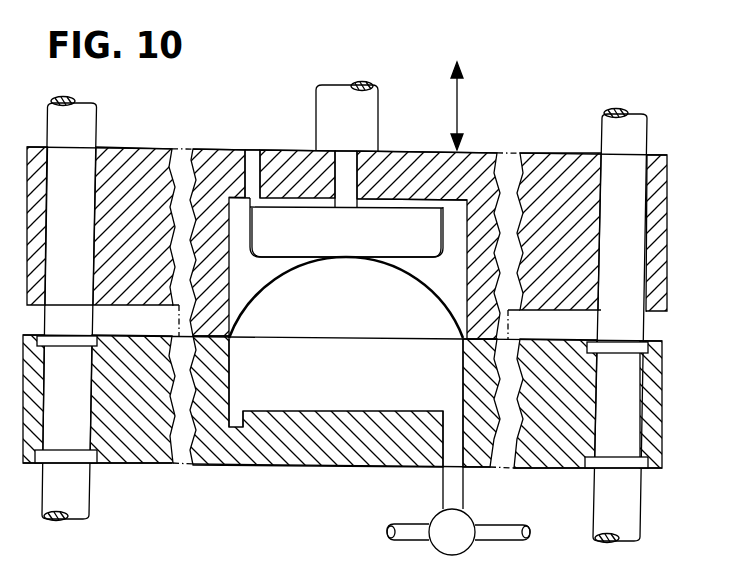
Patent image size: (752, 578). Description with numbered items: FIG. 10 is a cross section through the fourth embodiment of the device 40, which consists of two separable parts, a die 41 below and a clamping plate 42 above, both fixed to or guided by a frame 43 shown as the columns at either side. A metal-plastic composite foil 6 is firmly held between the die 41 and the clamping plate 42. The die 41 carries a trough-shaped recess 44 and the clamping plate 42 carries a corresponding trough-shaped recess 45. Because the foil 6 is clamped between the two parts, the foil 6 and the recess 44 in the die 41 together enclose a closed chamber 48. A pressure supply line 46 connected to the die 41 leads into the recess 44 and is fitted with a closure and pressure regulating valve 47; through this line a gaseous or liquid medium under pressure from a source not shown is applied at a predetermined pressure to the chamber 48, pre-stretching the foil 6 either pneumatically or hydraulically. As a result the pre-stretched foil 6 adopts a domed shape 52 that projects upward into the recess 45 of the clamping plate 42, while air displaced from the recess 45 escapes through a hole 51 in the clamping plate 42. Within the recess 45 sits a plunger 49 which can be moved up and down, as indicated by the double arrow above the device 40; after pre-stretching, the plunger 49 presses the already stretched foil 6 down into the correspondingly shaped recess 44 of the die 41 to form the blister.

The metal-plastic composite foil 6 is at (258, 298).
The device 40 is at (491, 143).
The die 41 is at (648, 427).
The clamping plate 42 is at (660, 225).
The frame 43 is at (73, 493).
The trough-shaped recess 44 is at (311, 400).
The trough-shaped recess 45 is at (240, 242).
The pressure supply line 46 is at (452, 485).
The closure and pressure regulating valve 47 is at (458, 520).
The closed chamber 48 is at (358, 392).
The plunger 49 is at (375, 228).
The hole 51 is at (252, 162).
The domed shape 52 is at (310, 268).